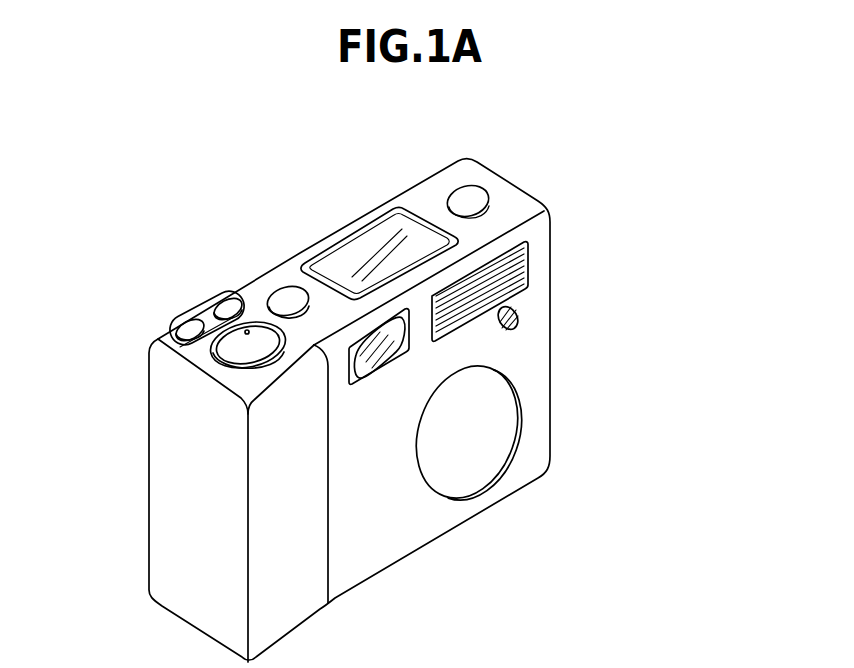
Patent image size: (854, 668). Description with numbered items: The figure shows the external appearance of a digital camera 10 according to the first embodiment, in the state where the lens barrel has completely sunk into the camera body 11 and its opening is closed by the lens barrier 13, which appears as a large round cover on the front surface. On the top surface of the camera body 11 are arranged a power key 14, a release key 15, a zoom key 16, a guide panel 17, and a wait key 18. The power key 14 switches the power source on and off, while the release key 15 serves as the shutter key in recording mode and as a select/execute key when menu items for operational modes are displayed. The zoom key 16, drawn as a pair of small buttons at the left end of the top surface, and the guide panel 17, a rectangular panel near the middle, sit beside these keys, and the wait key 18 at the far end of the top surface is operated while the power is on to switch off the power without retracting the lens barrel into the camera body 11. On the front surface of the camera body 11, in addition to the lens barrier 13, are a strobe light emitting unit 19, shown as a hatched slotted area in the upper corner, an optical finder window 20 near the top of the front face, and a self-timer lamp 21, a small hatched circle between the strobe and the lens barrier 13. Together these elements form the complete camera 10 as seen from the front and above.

The digital camera 10 is at (560, 492).
The camera body 11 is at (546, 203).
The lens barrier 13 is at (498, 407).
The power key 14 is at (277, 288).
The release key 15 is at (200, 367).
The zoom key 16 is at (203, 318).
The guide panel 17 is at (367, 242).
The wait key 18 is at (484, 192).
The strobe light emitting unit 19 is at (529, 265).
The optical finder window 20 is at (363, 382).
The self-timer lamp 21 is at (518, 318).